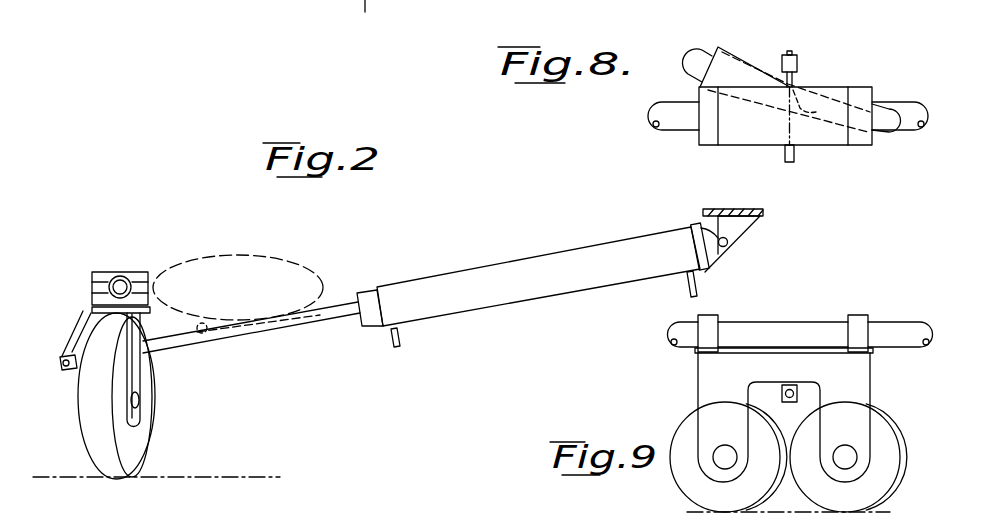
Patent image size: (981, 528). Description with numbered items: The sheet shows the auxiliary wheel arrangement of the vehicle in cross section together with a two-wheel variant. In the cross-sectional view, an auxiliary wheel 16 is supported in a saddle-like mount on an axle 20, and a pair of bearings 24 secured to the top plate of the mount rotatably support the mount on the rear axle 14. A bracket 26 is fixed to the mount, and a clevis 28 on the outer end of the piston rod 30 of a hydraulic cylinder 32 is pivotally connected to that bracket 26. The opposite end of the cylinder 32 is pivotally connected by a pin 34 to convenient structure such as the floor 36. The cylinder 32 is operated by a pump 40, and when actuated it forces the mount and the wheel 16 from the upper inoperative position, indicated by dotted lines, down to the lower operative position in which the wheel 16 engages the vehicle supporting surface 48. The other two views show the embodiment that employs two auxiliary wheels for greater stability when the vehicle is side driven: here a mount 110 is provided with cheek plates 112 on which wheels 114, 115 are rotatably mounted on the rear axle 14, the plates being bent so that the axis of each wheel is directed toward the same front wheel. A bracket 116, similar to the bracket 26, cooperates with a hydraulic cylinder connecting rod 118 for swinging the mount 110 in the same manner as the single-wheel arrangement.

In FIG. 2, the rear axle 14 is at (125, 278).
In FIG. 8, the rear axle 14 is at (662, 133).
In FIG. 9, the rear axle 14 is at (895, 322).
In FIG. 2, the auxiliary wheel 16 is at (154, 437).
In FIG. 2, the axle 20 is at (139, 399).
In FIG. 2, the bearings 24 is at (93, 271).
In FIG. 2, the bracket 26 is at (66, 338).
In FIG. 2, the clevis 28 is at (66, 372).
In FIG. 2, the piston rod 30 is at (328, 321).
In FIG. 2, the hydraulic cylinder 32 is at (474, 268).
In FIG. 2, the pin 34 is at (733, 247).
In FIG. 2, the floor 36 is at (732, 213).
In FIG. 2, the pump 40 is at (393, 348).
In FIG. 2, the vehicle supporting surface 48 is at (230, 477).
In FIG. 9, the mount 110 is at (698, 397).
In FIG. 9, the cheek plates 112 is at (698, 373).
In FIG. 8, the wheel 114 is at (691, 46).
In FIG. 9, the wheel 114 is at (678, 488).
In FIG. 8, the wheel 115 is at (888, 112).
In FIG. 9, the wheel 115 is at (897, 487).
In FIG. 8, the bracket 116 is at (796, 80).
In FIG. 8, the hydraulic cylinder connecting rod 118 is at (794, 158).
In FIG. 9, the hydraulic cylinder connecting rod 118 is at (797, 389).